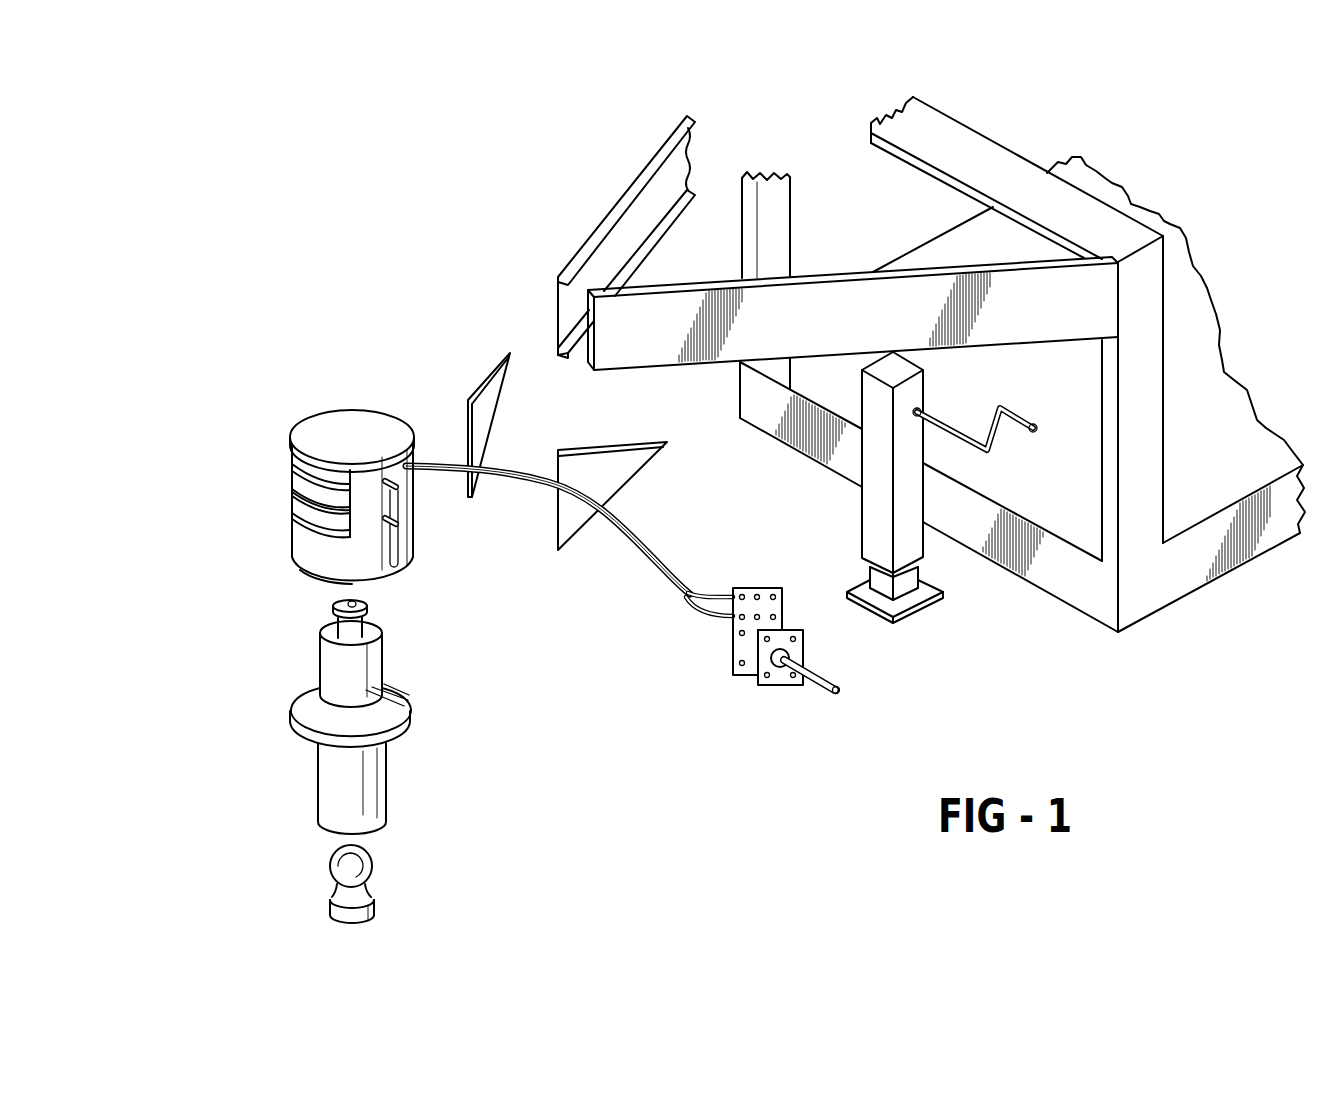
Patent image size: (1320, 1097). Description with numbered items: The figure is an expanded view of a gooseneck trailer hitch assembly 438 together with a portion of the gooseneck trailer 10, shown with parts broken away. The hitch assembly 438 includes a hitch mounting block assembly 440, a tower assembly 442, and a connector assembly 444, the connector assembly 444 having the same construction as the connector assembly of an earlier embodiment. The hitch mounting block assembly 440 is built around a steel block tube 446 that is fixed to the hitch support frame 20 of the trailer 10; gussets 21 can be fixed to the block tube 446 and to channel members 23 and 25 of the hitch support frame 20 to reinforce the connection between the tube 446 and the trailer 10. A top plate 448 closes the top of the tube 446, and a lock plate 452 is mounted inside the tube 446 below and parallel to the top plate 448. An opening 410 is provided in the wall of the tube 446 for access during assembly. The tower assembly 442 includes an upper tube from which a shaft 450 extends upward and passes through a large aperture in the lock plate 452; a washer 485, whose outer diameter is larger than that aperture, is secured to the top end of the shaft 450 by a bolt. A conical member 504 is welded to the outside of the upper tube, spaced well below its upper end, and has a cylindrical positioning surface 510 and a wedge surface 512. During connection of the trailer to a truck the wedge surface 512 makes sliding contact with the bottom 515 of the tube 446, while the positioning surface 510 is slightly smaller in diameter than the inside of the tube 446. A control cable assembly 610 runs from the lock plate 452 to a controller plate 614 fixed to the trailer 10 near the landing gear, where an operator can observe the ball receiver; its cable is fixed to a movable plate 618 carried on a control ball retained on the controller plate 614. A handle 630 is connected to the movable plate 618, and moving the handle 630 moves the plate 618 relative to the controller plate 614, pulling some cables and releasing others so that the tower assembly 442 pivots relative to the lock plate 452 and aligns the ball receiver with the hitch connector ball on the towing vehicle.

The gooseneck trailer 10 is at (1262, 572).
The hitch support frame 20 is at (620, 196).
The gussets 21 is at (492, 365).
The channel member 23 is at (680, 167).
The channel member 25 is at (848, 278).
The opening 410 is at (292, 510).
The gooseneck trailer hitch assembly 438 is at (320, 357).
The hitch mounting block assembly 440 is at (276, 430).
The tower assembly 442 is at (420, 725).
The connector assembly 444 is at (420, 848).
The steel block tube 446 is at (303, 547).
The top plate 448 is at (388, 420).
The shaft 450 is at (327, 620).
The lock plate 452 is at (293, 470).
The washer 485 is at (372, 596).
The conical member 504 is at (403, 693).
The cylindrical positioning surface 510 is at (290, 723).
The wedge surface 512 is at (307, 703).
The bottom edge of the tube 515 is at (314, 578).
The control cable assembly 610 is at (660, 580).
The controller plate 614 is at (764, 588).
The movable plate 618 is at (785, 680).
The handle 630 is at (825, 693).